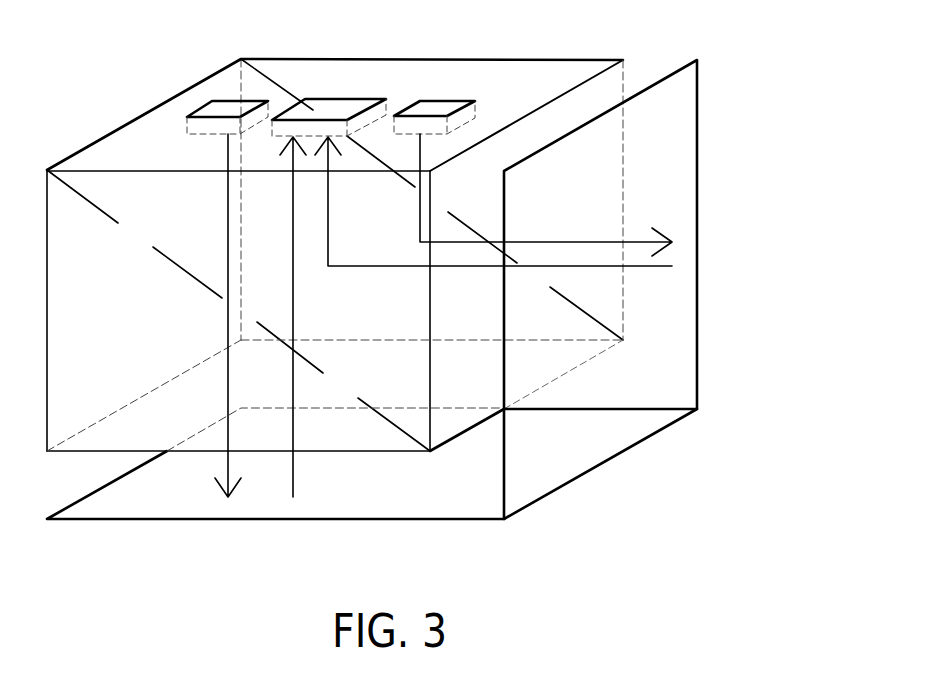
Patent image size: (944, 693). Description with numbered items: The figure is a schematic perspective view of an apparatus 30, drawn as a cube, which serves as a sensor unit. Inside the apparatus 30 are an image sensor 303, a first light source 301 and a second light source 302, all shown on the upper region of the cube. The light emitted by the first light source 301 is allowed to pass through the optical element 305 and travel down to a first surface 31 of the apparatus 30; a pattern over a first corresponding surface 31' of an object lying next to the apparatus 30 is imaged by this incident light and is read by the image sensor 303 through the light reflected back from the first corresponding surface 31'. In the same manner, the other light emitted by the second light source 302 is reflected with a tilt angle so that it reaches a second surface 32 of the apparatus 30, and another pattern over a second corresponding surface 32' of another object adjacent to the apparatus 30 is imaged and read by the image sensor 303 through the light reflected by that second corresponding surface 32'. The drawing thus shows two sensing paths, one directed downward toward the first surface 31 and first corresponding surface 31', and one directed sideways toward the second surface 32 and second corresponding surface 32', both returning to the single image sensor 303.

The apparatus 30 is at (557, 68).
The optical element 305 is at (133, 130).
The first light source 301 is at (222, 103).
The second light source 302 is at (442, 105).
The image sensor 303 is at (347, 103).
The first surface 31 is at (322, 423).
The first corresponding surface 31' is at (372, 489).
The second surface 32 is at (559, 238).
The second corresponding surface 32' is at (640, 289).